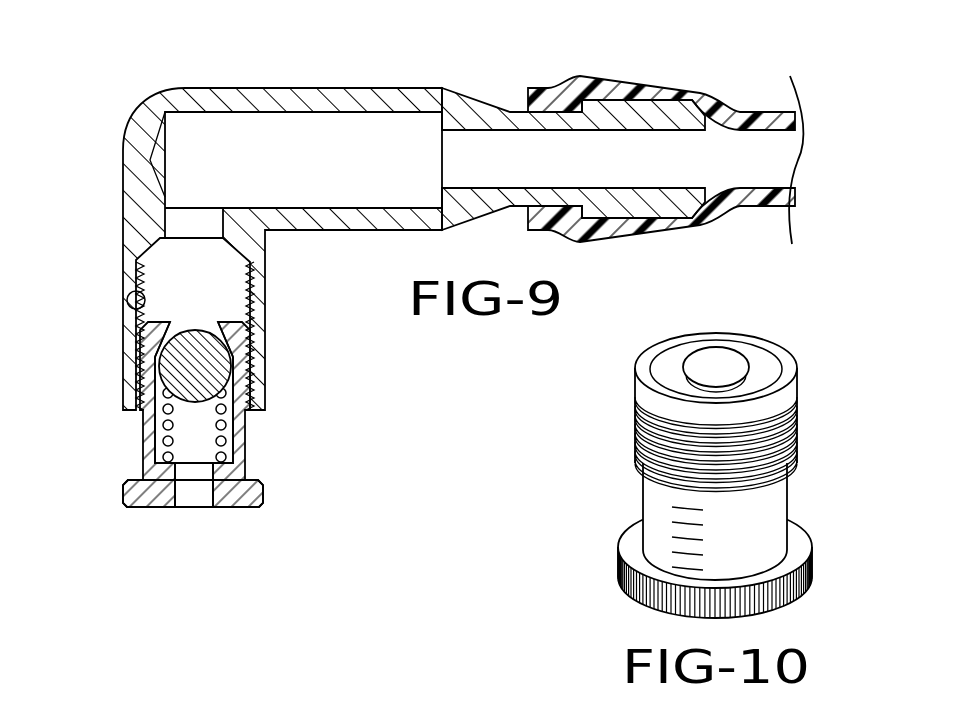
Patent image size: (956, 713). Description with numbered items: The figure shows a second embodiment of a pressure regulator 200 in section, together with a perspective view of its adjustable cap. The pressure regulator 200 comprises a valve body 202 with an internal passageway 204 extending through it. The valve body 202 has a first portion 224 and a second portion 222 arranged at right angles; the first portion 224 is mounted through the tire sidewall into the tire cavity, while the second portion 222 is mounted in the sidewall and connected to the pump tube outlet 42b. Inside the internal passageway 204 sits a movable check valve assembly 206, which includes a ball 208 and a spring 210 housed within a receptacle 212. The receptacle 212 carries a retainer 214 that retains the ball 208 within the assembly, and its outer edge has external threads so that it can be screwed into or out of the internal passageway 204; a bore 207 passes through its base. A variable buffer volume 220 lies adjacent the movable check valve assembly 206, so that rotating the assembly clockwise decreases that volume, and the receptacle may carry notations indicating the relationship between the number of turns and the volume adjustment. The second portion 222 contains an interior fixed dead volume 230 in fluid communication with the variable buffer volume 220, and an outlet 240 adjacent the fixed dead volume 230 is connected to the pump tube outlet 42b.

In FIG. 9, the pressure regulator 200 is at (370, 211).
In FIG. 9, the second portion 222 is at (285, 88).
In FIG. 9, the first portion 224 is at (265, 272).
In FIG. 9, the interior fixed dead volume 230 is at (330, 173).
In FIG. 9, the variable buffer volume 220 is at (186, 262).
In FIG. 9, the outlet 240 is at (470, 98).
In FIG. 9, the pump tube outlet 42b is at (628, 83).
In FIG. 9, the internal passageway 204 is at (128, 298).
In FIG. 9, the valve body 202 is at (264, 366).
In FIG. 9, the movable check valve assembly 206 is at (272, 497).
In FIG. 10, the movable check valve assembly 206 is at (603, 469).
In FIG. 9, the outlet opening 207 is at (190, 490).
In FIG. 9, the receptacle 212 is at (160, 435).
In FIG. 9, the spring 210 is at (222, 432).
In FIG. 9, the retainer 214 is at (226, 330).
In FIG. 9, the ball 208 is at (205, 364).
In FIG. 10, the ball 208 is at (716, 378).